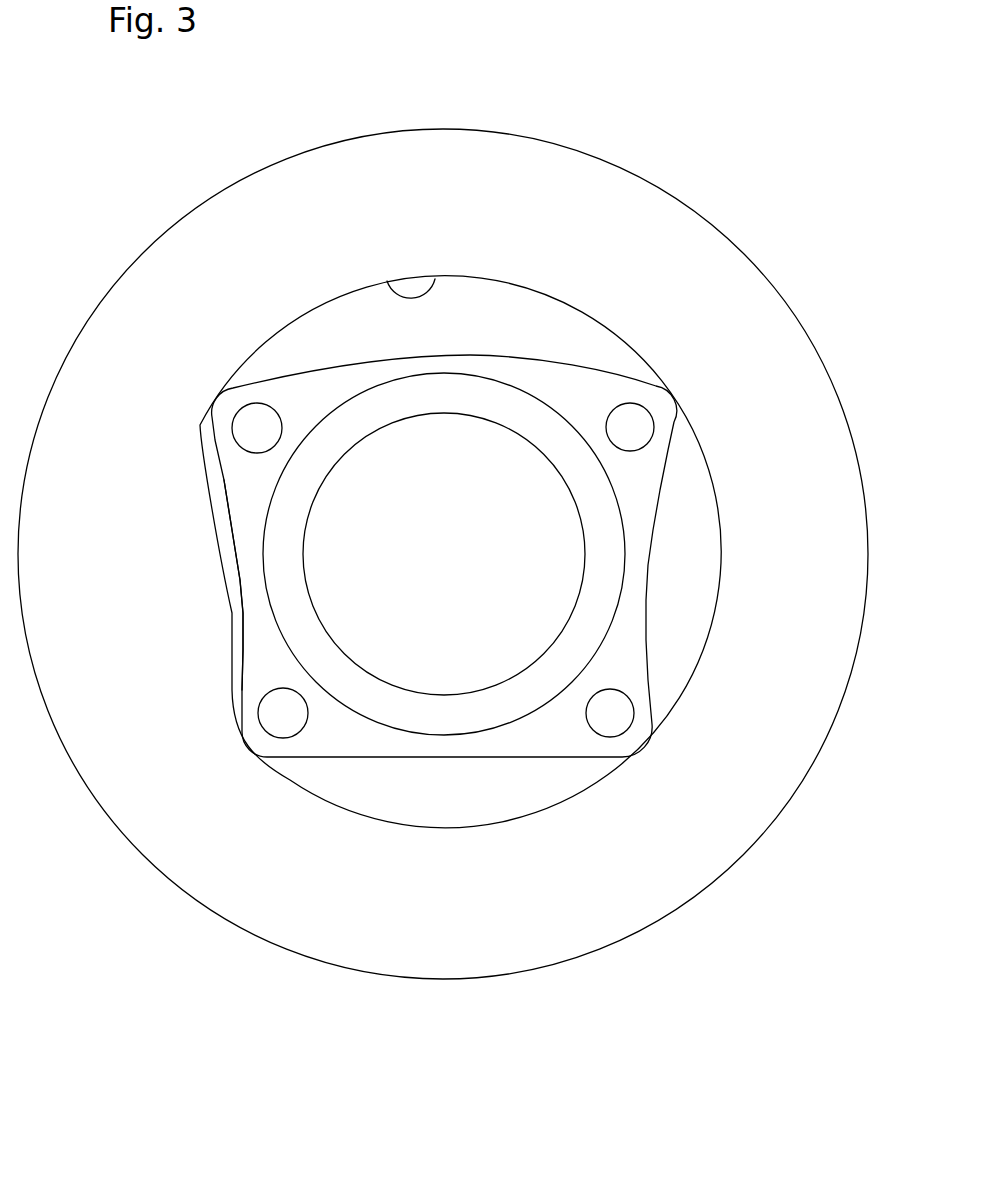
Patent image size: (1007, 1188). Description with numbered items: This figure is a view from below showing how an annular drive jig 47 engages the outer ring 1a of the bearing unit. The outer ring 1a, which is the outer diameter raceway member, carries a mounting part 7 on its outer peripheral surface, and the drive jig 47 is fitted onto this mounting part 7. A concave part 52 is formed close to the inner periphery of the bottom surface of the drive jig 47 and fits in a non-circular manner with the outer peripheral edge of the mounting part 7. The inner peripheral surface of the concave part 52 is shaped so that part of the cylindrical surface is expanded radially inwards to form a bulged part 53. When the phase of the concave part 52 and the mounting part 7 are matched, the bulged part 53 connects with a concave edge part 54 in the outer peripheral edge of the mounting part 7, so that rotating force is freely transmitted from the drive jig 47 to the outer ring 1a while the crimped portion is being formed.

The outer ring 1a is at (353, 735).
The mounting part 7 is at (247, 490).
The drive jig 47 is at (595, 203).
The concave part 52 is at (392, 288).
The bulged part 53 is at (217, 563).
The concave edge part 54 is at (243, 613).